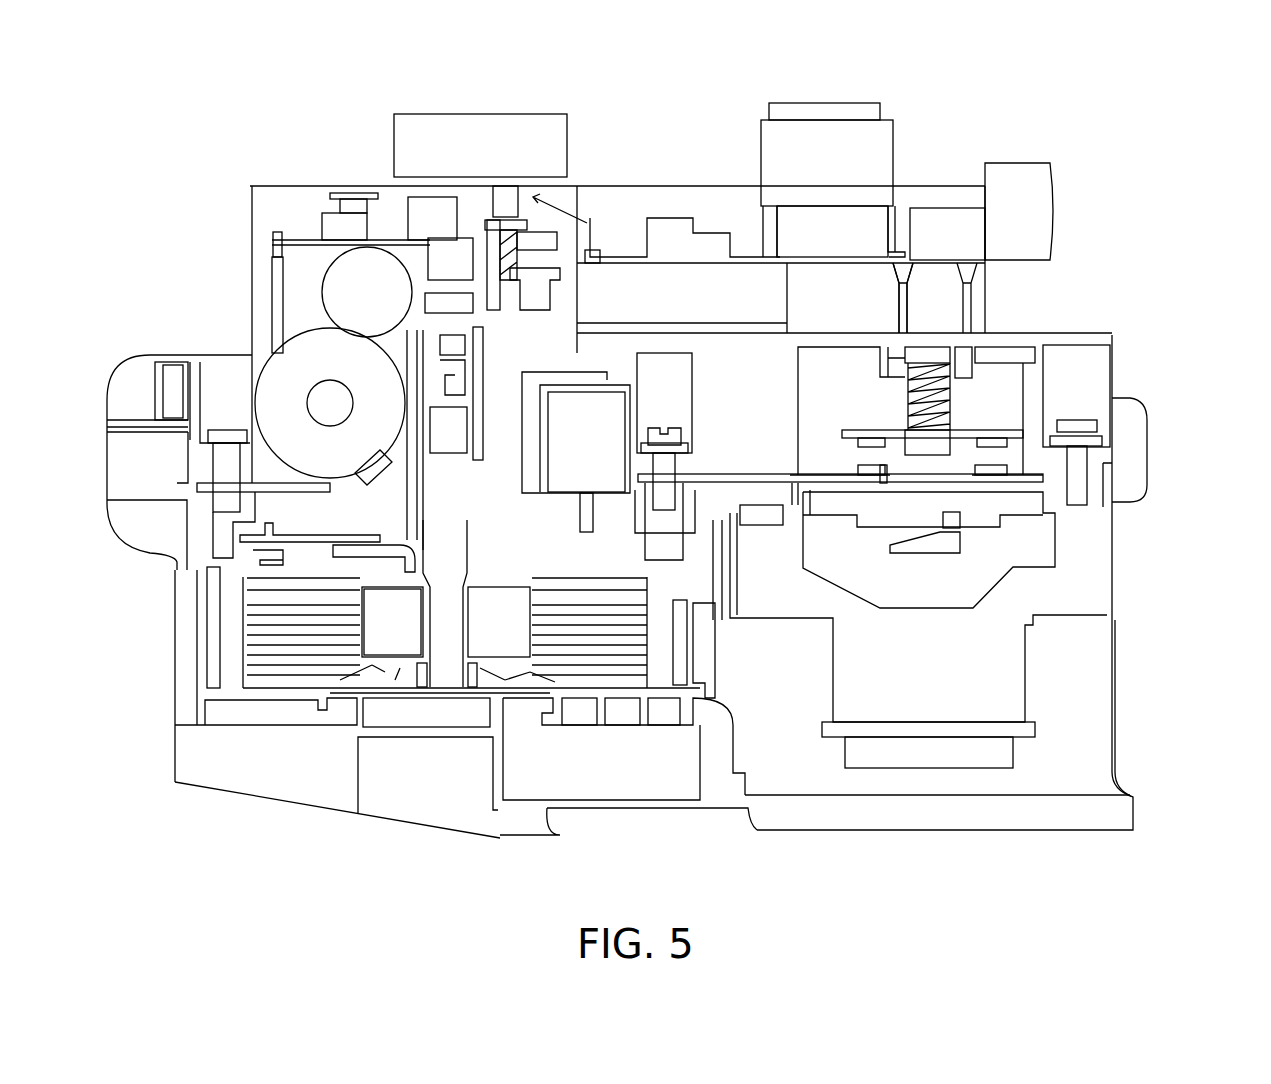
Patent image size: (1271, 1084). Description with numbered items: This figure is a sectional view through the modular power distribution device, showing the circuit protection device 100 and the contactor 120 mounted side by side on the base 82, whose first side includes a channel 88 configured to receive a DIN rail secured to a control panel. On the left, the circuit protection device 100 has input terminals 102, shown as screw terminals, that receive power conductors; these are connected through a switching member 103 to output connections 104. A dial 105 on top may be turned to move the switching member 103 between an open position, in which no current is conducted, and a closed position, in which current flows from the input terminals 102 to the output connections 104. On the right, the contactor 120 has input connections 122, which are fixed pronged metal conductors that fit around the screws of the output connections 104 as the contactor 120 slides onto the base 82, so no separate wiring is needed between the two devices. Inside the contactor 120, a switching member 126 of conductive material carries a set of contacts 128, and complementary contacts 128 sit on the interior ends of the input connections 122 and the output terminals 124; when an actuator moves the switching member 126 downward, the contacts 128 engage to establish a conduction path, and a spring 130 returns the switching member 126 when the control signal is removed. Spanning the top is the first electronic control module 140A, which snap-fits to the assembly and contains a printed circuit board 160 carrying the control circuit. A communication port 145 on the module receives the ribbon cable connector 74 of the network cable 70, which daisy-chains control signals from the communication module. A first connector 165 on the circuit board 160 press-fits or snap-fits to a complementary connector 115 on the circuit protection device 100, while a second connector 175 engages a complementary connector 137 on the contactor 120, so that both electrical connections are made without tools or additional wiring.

The dial 105 is at (472, 112).
The complementary connector 115 is at (572, 186).
The first connector 165 is at (590, 222).
The network cable 70 is at (778, 105).
The ribbon cable connector 74 is at (775, 157).
The first electronic control module 140A is at (668, 185).
The printed circuit board 160 is at (633, 255).
The communication port 145 is at (909, 173).
The second connector 175 is at (895, 228).
The complementary connector 137 is at (880, 270).
The spring 130 is at (930, 365).
The switching member 126 is at (962, 428).
The contacts 128 is at (870, 465).
The input terminals 102 is at (230, 391).
The output connections 104 is at (666, 410).
The input connections 122 is at (700, 472).
The output terminals 124 is at (1081, 410).
The switching member 103 is at (398, 592).
The circuit protection device 100 is at (175, 667).
The base 82 is at (362, 816).
The channel 88 is at (570, 812).
The contactor 120 is at (1117, 752).